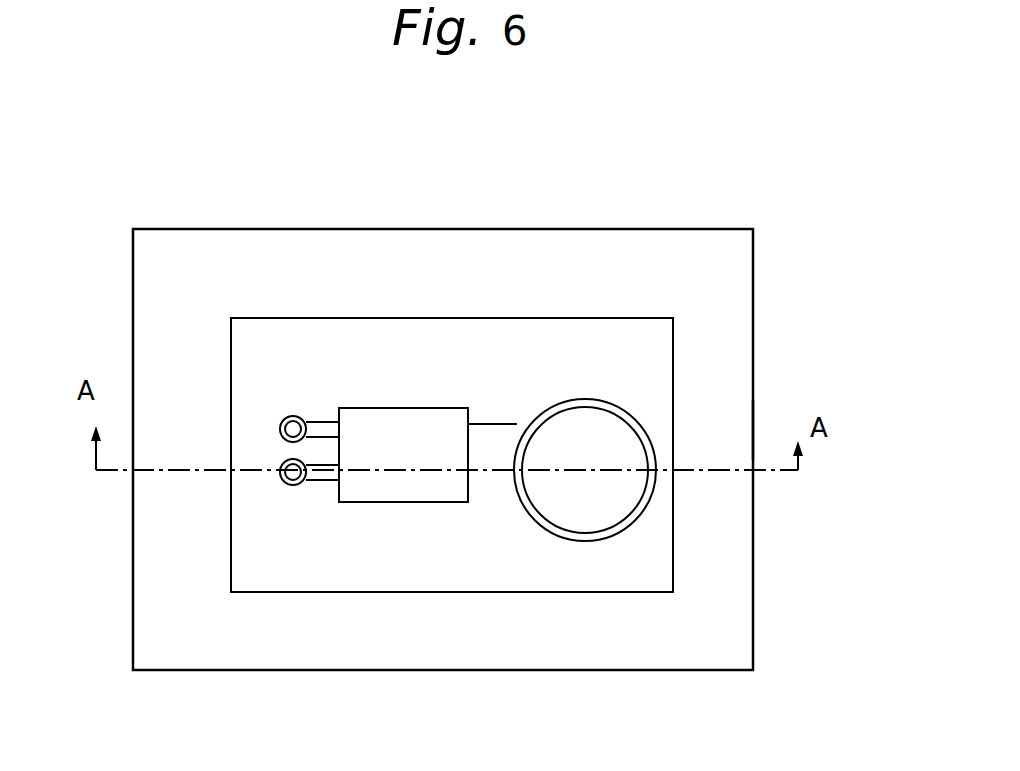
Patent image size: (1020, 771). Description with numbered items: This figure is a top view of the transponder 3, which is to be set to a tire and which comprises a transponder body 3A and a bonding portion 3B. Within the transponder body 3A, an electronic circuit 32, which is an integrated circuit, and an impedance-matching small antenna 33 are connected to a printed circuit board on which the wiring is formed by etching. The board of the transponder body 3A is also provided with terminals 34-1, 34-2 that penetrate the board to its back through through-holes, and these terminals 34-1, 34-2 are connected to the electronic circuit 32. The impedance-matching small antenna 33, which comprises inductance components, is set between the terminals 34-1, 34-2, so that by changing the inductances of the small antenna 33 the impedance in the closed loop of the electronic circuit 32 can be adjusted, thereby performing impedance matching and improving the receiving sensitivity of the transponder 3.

The transponder 3 is at (441, 213).
The transponder body 3A is at (344, 328).
The bonding portion 3B is at (736, 428).
The electronic circuit 32 is at (410, 503).
The impedance-matching small antenna 33 is at (565, 400).
The terminal 34-1 is at (296, 416).
The terminal 34-2 is at (293, 486).